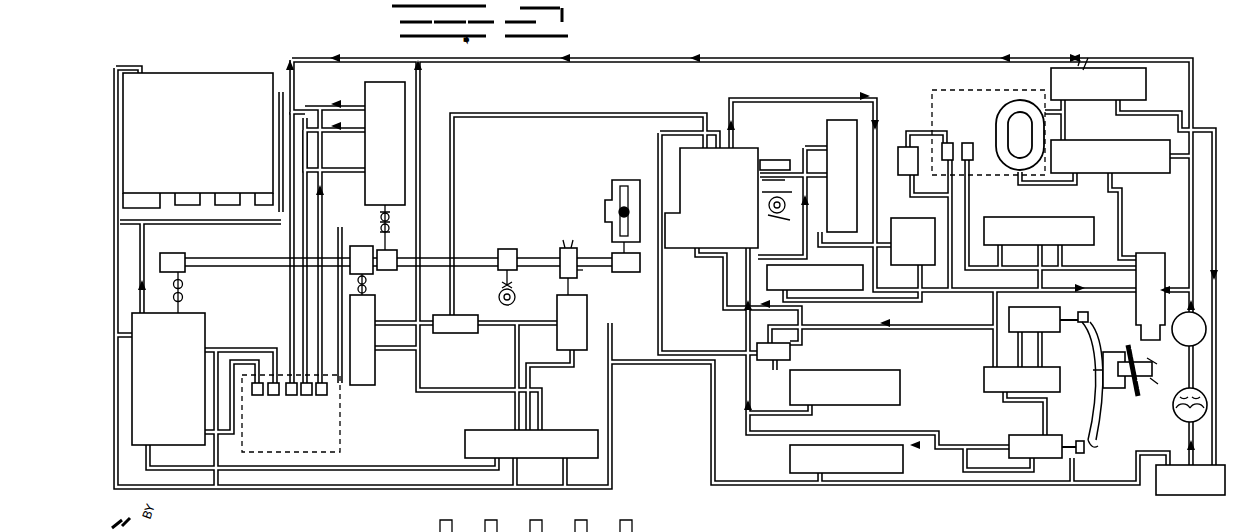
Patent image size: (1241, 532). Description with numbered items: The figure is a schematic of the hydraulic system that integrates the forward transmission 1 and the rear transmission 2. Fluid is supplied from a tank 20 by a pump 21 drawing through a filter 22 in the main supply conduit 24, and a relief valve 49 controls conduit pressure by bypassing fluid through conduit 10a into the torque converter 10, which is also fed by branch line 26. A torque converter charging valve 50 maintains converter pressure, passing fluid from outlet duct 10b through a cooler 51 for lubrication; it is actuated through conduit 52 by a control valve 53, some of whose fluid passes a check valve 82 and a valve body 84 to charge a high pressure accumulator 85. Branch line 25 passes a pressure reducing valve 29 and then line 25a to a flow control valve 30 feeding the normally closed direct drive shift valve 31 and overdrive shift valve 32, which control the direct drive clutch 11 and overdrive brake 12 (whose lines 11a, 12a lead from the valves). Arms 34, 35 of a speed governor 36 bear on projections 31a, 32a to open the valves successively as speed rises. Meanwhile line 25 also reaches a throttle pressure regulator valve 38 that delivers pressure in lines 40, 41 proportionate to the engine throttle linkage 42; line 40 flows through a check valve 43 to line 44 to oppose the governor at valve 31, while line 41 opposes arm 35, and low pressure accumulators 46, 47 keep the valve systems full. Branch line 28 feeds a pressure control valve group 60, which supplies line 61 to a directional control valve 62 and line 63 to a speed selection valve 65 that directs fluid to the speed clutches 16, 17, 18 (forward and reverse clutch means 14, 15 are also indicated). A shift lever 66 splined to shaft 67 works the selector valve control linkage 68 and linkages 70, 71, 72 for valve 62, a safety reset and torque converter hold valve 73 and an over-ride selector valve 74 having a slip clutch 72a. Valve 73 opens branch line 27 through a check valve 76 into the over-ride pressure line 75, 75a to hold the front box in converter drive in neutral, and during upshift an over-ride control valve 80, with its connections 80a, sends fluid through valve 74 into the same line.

The forward transmission 1 is at (978, 66).
The rear transmission 2 is at (296, 454).
The hydraulic torque converter 10 is at (1026, 100).
The conduit 10a is at (1059, 120).
The torque converter outlet duct 10b is at (1018, 181).
The direct drive clutch 11 is at (944, 142).
The conduit 11a is at (950, 210).
The overdrive brake 12 is at (968, 142).
The conduit 12a is at (970, 212).
The forward hydraulic clutch means 14 is at (636, 528).
The reverse hydraulic clutch means 15 is at (592, 528).
The low speed hydraulic clutch 16 is at (256, 396).
The second speed hydraulic clutch 17 is at (308, 396).
The high speed hydraulic clutch 18 is at (290, 396).
The tank 20 is at (1204, 472).
The pump 21 is at (1207, 398).
The filter 22 is at (1207, 327).
The main supply conduit 24 is at (1197, 258).
The branch line 25 is at (1090, 300).
The branch line 25a is at (993, 362).
The branch line 26 is at (1094, 58).
The branch line 27 is at (422, 386).
The branch line 28 is at (290, 75).
The pressure reducing valve 29 is at (1140, 301).
The flow control valve 30 is at (1022, 379).
The direct drive shift valve 31 is at (1034, 319).
The projection 31a is at (1080, 310).
The overdrive shift valve 32 is at (1035, 446).
The projection 32a is at (1063, 460).
The arm 34 is at (1092, 346).
The arm 35 is at (1096, 448).
The speed governor 36 is at (1116, 396).
The throttle pressure regulator valve 38 is at (706, 204).
The line 40 is at (726, 288).
The line 41 is at (878, 436).
The engine throttle linkage 42 is at (792, 222).
The check valve 43 is at (784, 362).
The line 44 is at (892, 322).
The low pressure accumulator 46 is at (833, 396).
The low pressure accumulator 47 is at (834, 469).
The relief valve 49 is at (1086, 94).
The torque converter charging valve 50 is at (1098, 166).
The cooler 51 is at (908, 161).
The conduit 52 is at (1124, 244).
The control valve 53 is at (1027, 241).
The pressure control valve group 60 is at (186, 142).
The line 61 is at (308, 110).
The directional control valve 62 is at (374, 154).
The line 63 is at (326, 466).
The speed selection valve 65 is at (156, 389).
The shift lever 66 is at (606, 205).
The shaft 67 is at (238, 258).
The selector valve control linkage 68 is at (184, 294).
The linkage 70 is at (383, 244).
The linkage 71 is at (367, 291).
The linkage 72 is at (562, 244).
The slip clutch 72a is at (581, 271).
The safety reset and torque converter hold valve 73 is at (372, 346).
The over-ride selector valve 74 is at (562, 334).
The over-ride pressure line 75 is at (548, 116).
The over-ride pressure line 75a is at (657, 302).
The check valve 76 is at (455, 324).
The over-ride control valve 80 is at (519, 454).
The line 80a is at (530, 378).
The check valve 82 is at (901, 251).
The valve body 84 is at (803, 287).
The high pressure accumulator 85 is at (832, 176).